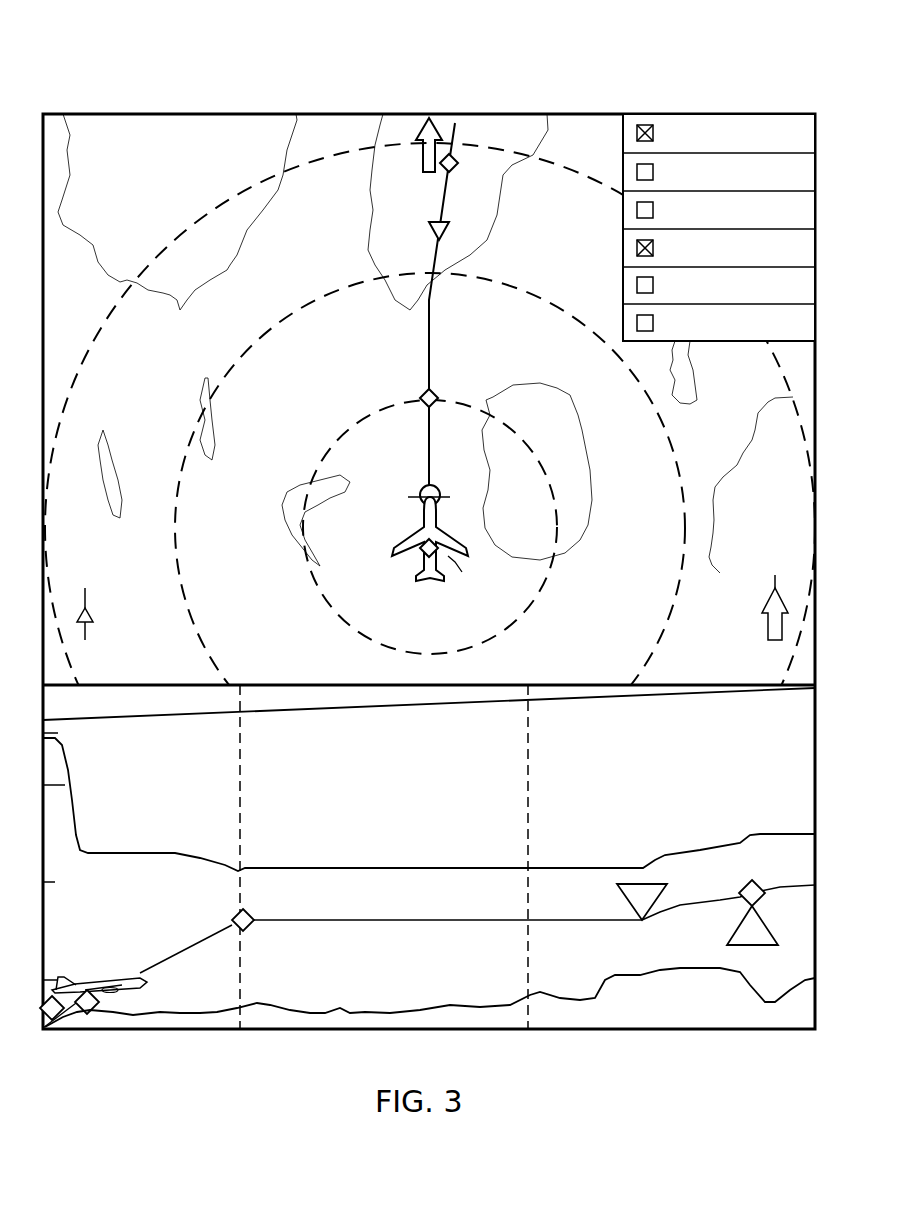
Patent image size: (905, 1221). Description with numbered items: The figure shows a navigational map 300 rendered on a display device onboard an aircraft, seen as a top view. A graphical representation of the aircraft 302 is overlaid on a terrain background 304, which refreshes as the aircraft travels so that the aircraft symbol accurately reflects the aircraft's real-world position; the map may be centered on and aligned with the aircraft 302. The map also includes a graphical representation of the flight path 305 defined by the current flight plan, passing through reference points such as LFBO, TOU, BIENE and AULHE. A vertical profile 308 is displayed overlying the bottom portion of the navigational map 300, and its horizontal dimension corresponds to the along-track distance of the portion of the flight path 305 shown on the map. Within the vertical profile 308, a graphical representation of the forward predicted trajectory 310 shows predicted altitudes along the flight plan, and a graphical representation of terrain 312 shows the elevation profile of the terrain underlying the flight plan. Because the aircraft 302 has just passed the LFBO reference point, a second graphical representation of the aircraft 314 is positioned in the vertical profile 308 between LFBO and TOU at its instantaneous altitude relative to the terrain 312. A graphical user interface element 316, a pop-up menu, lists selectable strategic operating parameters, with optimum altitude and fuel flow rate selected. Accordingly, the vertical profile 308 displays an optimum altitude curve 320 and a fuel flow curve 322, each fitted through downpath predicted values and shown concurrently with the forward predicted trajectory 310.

The navigational map 300 is at (429, 518).
The graphical representation of the aircraft 302 is at (424, 536).
The background 304 is at (252, 547).
The flight path 305 is at (415, 304).
The vertical profile 308 is at (403, 892).
The forward predicted trajectory 310 is at (477, 922).
The terrain 312 is at (715, 1012).
The graphical representation of the aircraft 314 is at (127, 1002).
The graphical user interface element 316 is at (719, 205).
The optimum altitude curve 320 is at (429, 724).
The fuel flow curve 322 is at (429, 804).